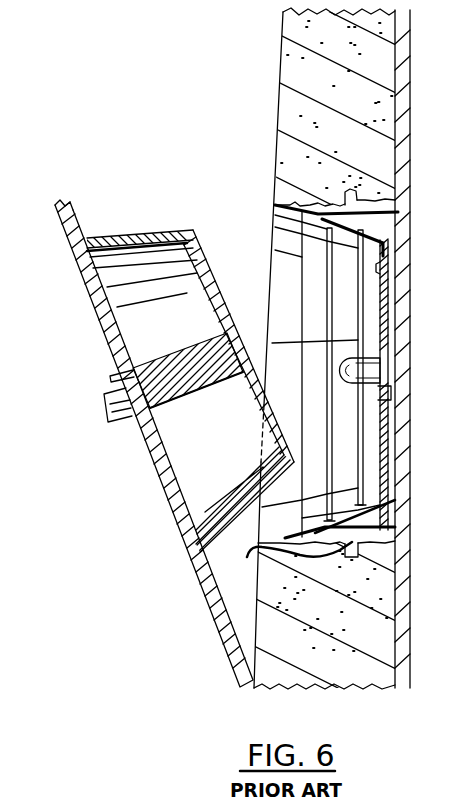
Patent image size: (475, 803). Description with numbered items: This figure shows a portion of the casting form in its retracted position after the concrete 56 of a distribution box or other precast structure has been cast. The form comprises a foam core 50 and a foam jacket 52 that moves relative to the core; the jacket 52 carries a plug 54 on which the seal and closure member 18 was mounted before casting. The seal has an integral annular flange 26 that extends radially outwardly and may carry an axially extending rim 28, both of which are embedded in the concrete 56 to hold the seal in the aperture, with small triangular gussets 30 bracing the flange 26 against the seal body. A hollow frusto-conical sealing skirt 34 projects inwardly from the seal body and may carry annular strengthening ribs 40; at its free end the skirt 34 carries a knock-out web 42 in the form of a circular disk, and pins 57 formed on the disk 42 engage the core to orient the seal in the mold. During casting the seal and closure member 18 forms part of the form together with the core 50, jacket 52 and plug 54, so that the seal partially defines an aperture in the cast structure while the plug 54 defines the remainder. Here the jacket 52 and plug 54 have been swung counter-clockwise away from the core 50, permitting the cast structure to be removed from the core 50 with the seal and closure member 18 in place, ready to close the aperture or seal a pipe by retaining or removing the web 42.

The concrete 56 is at (292, 68).
The rim 28 is at (350, 184).
The gusset 30 is at (363, 207).
The foam core 50 is at (402, 243).
The annular strengthening rib 40 is at (328, 280).
The seal and closure member 18 is at (397, 313).
The pin 57 is at (383, 380).
The knock-out web 42 is at (383, 394).
The sealing skirt 34 is at (372, 527).
The annular flange 26 is at (288, 562).
The foam jacket 52 is at (158, 455).
The plug 54 is at (203, 273).